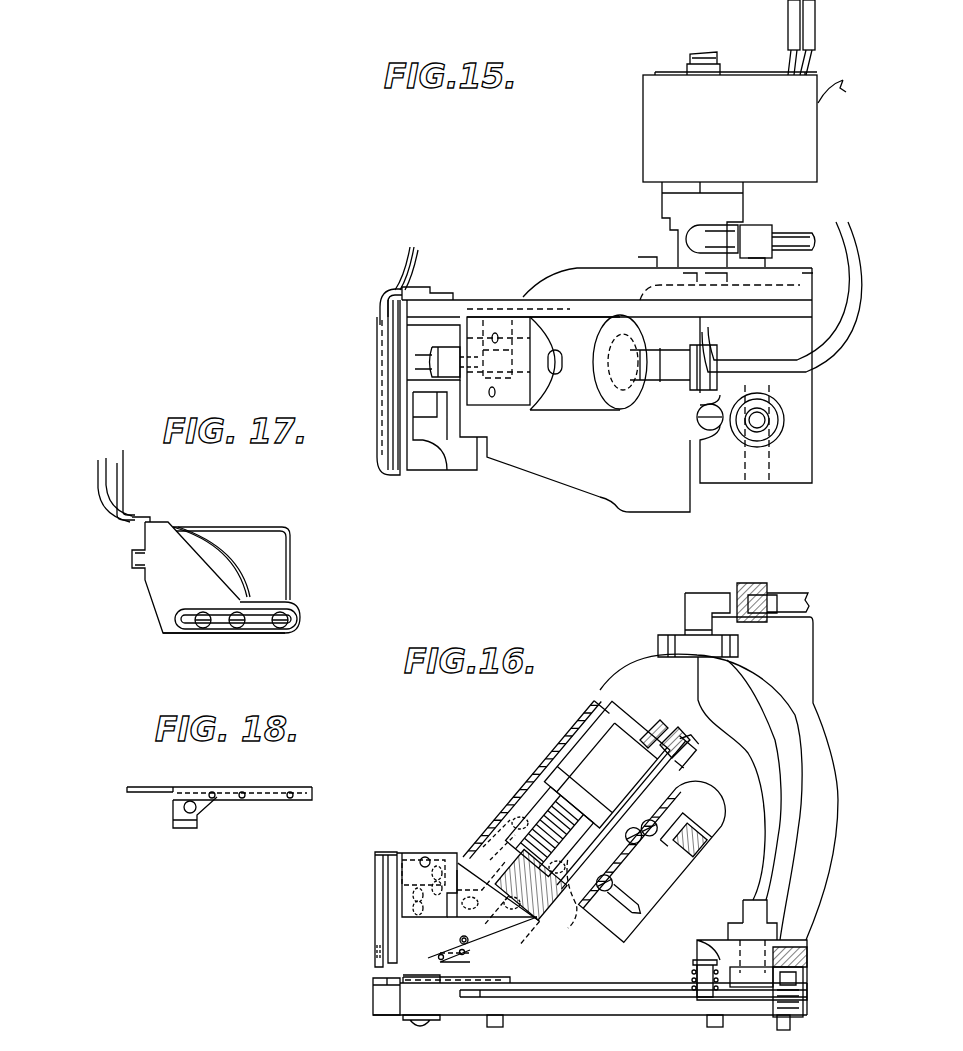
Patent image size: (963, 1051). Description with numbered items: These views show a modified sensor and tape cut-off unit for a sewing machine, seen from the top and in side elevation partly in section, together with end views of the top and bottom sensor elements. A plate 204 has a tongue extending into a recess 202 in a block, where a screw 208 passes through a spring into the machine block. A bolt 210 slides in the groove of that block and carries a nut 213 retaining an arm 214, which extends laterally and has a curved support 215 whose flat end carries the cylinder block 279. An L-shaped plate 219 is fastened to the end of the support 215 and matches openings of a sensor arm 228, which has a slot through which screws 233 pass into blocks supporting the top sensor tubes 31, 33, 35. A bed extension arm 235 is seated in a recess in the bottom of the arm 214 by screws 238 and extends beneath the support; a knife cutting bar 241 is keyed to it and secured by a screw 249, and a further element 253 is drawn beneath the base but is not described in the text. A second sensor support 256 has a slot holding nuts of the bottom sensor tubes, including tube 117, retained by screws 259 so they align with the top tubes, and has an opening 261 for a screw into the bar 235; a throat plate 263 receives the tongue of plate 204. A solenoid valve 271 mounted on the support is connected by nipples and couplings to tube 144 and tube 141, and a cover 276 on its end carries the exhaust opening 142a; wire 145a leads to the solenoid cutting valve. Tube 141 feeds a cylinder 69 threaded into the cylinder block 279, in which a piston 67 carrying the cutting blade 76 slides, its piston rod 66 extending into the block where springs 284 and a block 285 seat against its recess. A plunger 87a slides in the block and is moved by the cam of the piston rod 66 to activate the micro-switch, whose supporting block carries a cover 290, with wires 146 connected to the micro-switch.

In FIG. 15, the exhaust port 142a is at (697, 52).
In FIG. 15, the wire 145a is at (795, 30).
In FIG. 15, the cover 276 is at (652, 128).
In FIG. 16, the cover 276 is at (798, 660).
In FIG. 15, the solenoid valve 271 is at (674, 208).
In FIG. 15, the tube 144 is at (786, 240).
In FIG. 16, the tube 144 is at (790, 603).
In FIG. 15, the sensor arm 228 is at (443, 293).
In FIG. 17, the sensor arm 228 is at (167, 598).
In FIG. 16, the sensor arm 228 is at (383, 899).
In FIG. 15, the cylinder block 279 is at (513, 332).
In FIG. 15, the knife cutting bar 241 is at (425, 328).
In FIG. 15, the cutting blade 76 is at (418, 350).
In FIG. 16, the cutting blade 76 is at (467, 966).
In FIG. 15, the second sensor support 256 is at (377, 385).
In FIG. 18, the second sensor support 256 is at (308, 790).
In FIG. 16, the second sensor support 256 is at (380, 1000).
In FIG. 15, the throat plate 263 is at (428, 463).
In FIG. 16, the throat plate 263 is at (408, 975).
In FIG. 15, the plate 204 is at (583, 474).
In FIG. 16, the plate 204 is at (567, 983).
In FIG. 15, the cylinder 69 is at (588, 404).
In FIG. 16, the cylinder 69 is at (594, 702).
In FIG. 15, the screw 208 is at (706, 426).
In FIG. 16, the screw 208 is at (704, 988).
In FIG. 15, the nut 213 is at (770, 420).
In FIG. 15, the arm 214 is at (796, 466).
In FIG. 16, the arm 214 is at (774, 946).
In FIG. 15, the curved support 215 is at (838, 326).
In FIG. 16, the curved support 215 is at (823, 771).
In FIG. 15, the tube 141 is at (826, 343).
In FIG. 16, the tube 141 is at (716, 740).
In FIG. 17, the sensor tube 31 is at (103, 498).
In FIG. 17, the sensor tube 33 is at (238, 558).
In FIG. 17, the sensor tube 35 is at (292, 556).
In FIG. 17, the screws 233 is at (273, 632).
In FIG. 18, the sensor tube 117 is at (153, 787).
In FIG. 18, the opening 261 is at (186, 808).
In FIG. 18, the screws 259 is at (243, 812).
In FIG. 16, the piston 67 is at (583, 757).
In FIG. 16, the springs 284 is at (508, 860).
In FIG. 16, the L-shaped plate 219 is at (425, 857).
In FIG. 16, the piston rod 66 is at (488, 924).
In FIG. 16, the block 285 is at (540, 900).
In FIG. 16, the plunger 87a is at (572, 892).
In FIG. 16, the cover 290 is at (670, 868).
In FIG. 16, the wires 146 is at (640, 903).
In FIG. 16, the bolt 210 is at (751, 979).
In FIG. 16, the recess 202 is at (805, 994).
In FIG. 16, the foot 253 is at (418, 1023).
In FIG. 16, the screw 249 is at (495, 1027).
In FIG. 16, the bed extension arm 235 is at (596, 1010).
In FIG. 16, the screws 238 is at (780, 1030).